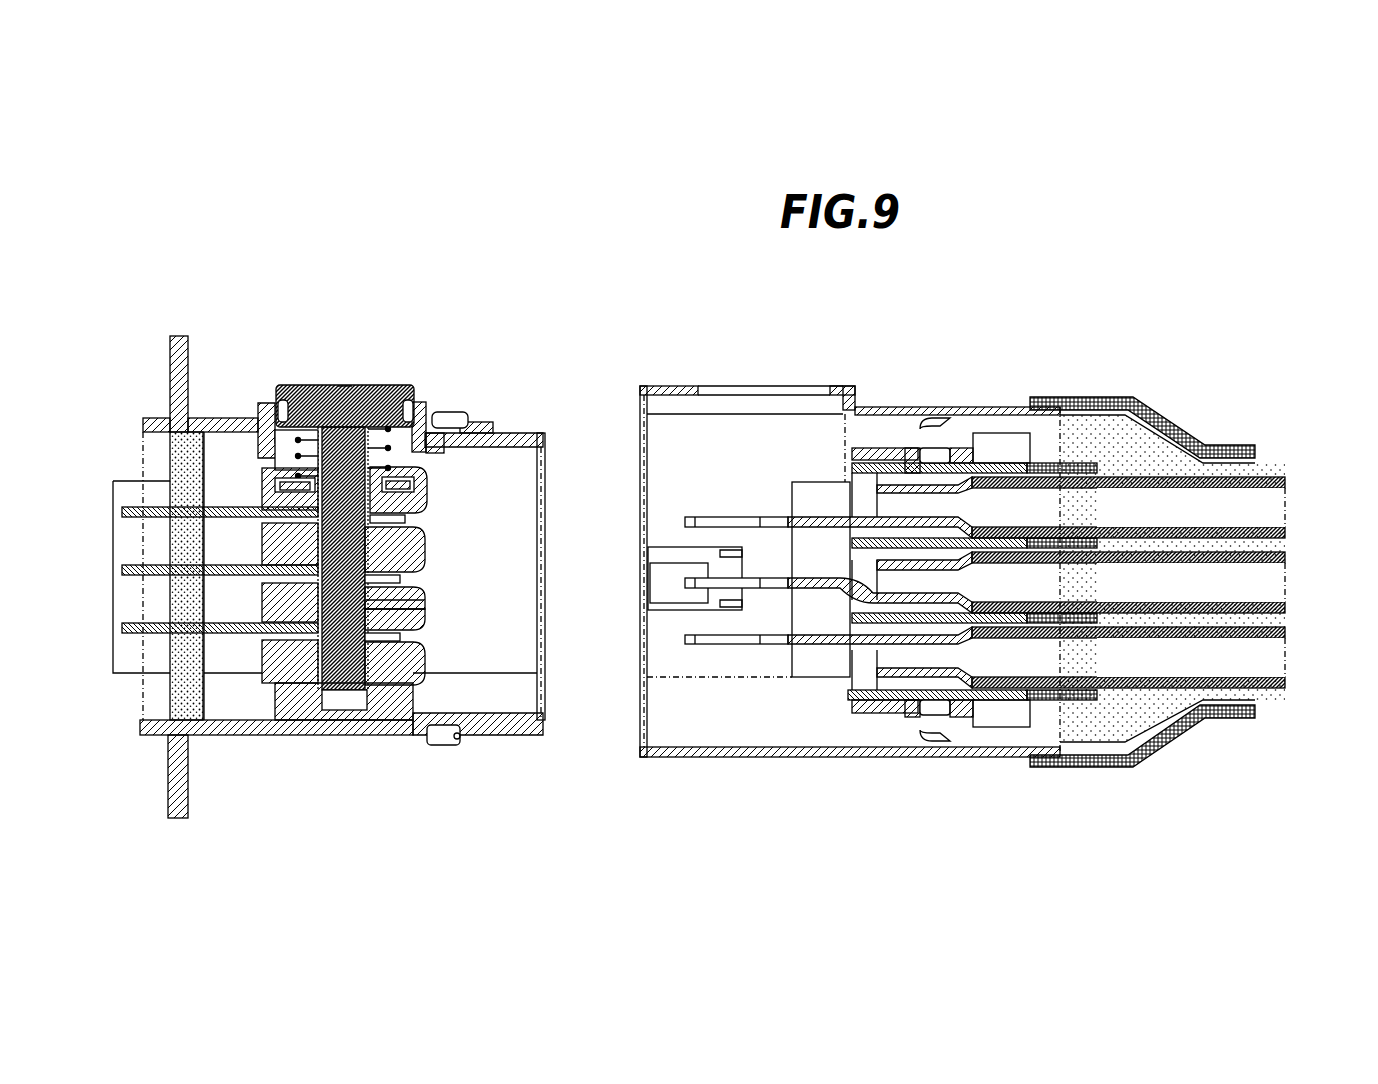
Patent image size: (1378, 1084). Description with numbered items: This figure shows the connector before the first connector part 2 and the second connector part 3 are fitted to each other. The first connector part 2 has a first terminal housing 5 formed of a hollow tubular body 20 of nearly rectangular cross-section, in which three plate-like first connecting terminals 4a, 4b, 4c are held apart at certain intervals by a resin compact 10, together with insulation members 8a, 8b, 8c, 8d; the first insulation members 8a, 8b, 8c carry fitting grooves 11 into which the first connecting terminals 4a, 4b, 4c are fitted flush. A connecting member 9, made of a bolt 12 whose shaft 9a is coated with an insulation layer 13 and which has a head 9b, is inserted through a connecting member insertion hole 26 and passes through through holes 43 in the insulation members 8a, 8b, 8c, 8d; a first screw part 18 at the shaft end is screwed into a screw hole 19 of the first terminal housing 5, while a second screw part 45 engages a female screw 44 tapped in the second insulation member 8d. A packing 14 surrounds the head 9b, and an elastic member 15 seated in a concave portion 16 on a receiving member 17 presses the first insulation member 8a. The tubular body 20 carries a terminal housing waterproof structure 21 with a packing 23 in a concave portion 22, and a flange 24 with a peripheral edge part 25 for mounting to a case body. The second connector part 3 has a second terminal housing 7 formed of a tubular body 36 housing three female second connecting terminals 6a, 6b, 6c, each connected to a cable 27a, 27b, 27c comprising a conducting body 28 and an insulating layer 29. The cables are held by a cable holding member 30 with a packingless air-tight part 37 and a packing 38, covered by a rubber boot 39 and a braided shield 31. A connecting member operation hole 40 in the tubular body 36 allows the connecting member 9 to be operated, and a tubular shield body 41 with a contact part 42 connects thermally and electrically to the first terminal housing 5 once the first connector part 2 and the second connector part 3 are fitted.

The first connector part 2 is at (108, 322).
The second connector part 3 is at (655, 352).
The first connecting terminal 4a is at (126, 507).
The first connecting terminal 4b is at (126, 565).
The first connecting terminal 4c is at (126, 623).
The first terminal housing 5 is at (200, 418).
The second connecting terminal 6a is at (685, 522).
The second connecting terminal 6b is at (685, 583).
The second connecting terminal 6c is at (685, 640).
The second terminal housing 7 is at (678, 757).
The first insulation member 8a is at (425, 500).
The first insulation member 8b is at (425, 550).
The first insulation member 8c is at (425, 607).
The second insulation member 8d is at (425, 660).
The connecting member 9 is at (311, 384).
The shaft 9a is at (290, 540).
The head 9b is at (340, 386).
The resin compact 10 is at (170, 700).
The fitting groove 11 is at (405, 519).
The bolt 12 is at (360, 386).
The insulation layer 13 is at (290, 592).
The packing 14 is at (276, 400).
The elastic member 15 is at (392, 452).
The concave portion 16 is at (275, 470).
The receiving member 17 is at (444, 488).
The first screw part 18 is at (380, 688).
The screw hole 19 is at (332, 710).
The tubular body 20 is at (508, 433).
The terminal housing waterproof structure 21 is at (445, 748).
The concave portion 22 is at (462, 737).
The packing 23 is at (455, 746).
The flange 24 is at (188, 337).
The peripheral edge part 25 is at (170, 360).
The connecting member insertion hole 26 is at (408, 400).
The cable 27a is at (1290, 490).
The cable 27b is at (1290, 565).
The cable 27c is at (1290, 641).
The conducting body 28 is at (1285, 512).
The insulating layer 29 is at (1285, 535).
The cable holding member 30 is at (1040, 767).
The braided shield 31 is at (1160, 445).
The tubular body 36 is at (862, 406).
The packingless air-tight part 37 is at (1050, 463).
The packing 38 is at (920, 740).
The rubber boot 39 is at (1100, 397).
The connecting member operation hole 40 is at (700, 386).
The tubular shield body 41 is at (990, 735).
The contact part 42 is at (918, 425).
The through hole 43 is at (420, 588).
The female screw 44 is at (290, 655).
The second screw part 45 is at (420, 616).